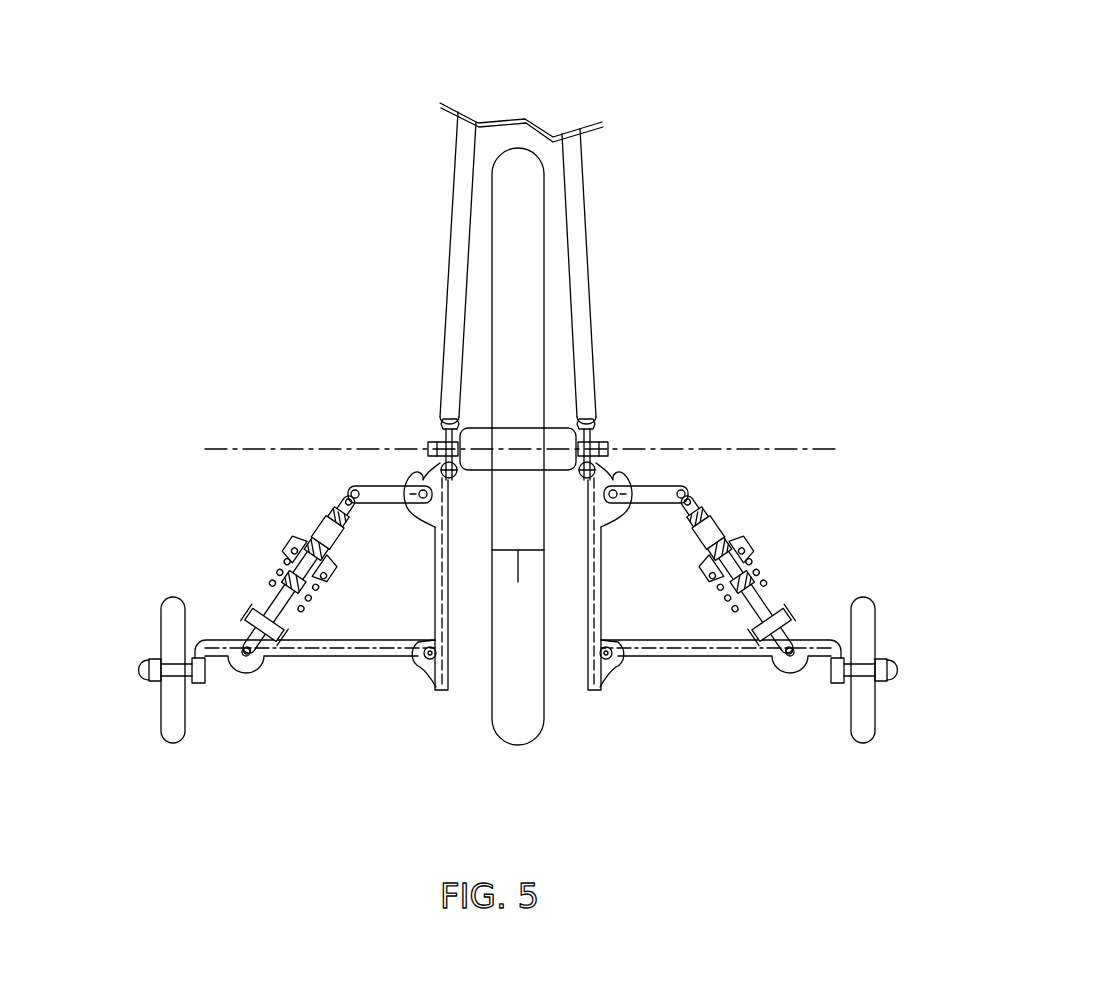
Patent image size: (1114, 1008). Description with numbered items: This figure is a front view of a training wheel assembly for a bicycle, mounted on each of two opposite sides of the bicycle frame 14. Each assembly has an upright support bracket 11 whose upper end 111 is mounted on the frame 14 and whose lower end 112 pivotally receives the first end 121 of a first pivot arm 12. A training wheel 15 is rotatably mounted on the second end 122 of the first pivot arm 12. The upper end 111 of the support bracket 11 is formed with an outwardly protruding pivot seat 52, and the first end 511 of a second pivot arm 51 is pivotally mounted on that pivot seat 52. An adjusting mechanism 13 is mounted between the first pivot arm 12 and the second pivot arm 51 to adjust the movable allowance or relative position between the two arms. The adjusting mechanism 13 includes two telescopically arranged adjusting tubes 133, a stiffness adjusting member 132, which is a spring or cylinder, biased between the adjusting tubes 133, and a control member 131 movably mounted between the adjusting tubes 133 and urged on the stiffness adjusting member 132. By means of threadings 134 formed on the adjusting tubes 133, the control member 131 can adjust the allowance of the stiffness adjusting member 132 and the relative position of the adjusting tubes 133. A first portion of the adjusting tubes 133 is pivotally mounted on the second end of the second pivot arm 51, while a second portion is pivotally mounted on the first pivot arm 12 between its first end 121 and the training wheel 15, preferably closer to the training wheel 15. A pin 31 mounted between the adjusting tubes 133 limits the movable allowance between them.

The upright support bracket 11 is at (600, 527).
The upper end 111 is at (597, 440).
The lower end 112 is at (600, 660).
The first pivot arm 12 is at (713, 652).
The first end 121 is at (606, 658).
The second end 122 is at (832, 660).
The adjusting mechanism 13 is at (870, 529).
The control member 131 is at (742, 548).
The stiffness adjusting member 132 is at (785, 600).
The adjusting tubes 133 is at (703, 510).
The threadings 134 is at (768, 585).
The frame 14 is at (607, 170).
The training wheel 15 is at (862, 614).
The pin 31 is at (510, 548).
The second pivot arm 51 is at (657, 495).
The first end 511 is at (623, 497).
The pivot seat 52 is at (605, 507).